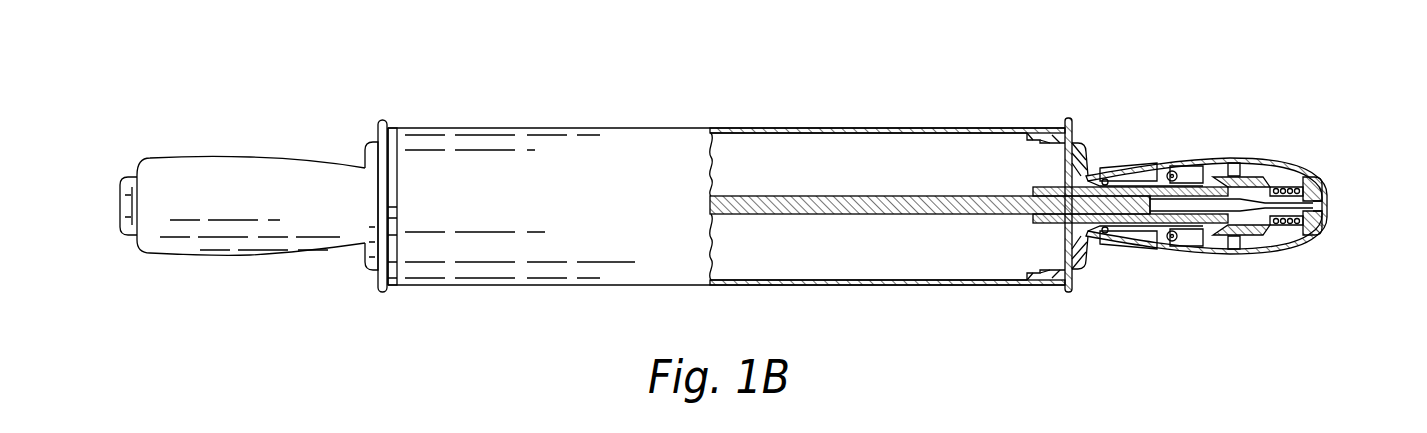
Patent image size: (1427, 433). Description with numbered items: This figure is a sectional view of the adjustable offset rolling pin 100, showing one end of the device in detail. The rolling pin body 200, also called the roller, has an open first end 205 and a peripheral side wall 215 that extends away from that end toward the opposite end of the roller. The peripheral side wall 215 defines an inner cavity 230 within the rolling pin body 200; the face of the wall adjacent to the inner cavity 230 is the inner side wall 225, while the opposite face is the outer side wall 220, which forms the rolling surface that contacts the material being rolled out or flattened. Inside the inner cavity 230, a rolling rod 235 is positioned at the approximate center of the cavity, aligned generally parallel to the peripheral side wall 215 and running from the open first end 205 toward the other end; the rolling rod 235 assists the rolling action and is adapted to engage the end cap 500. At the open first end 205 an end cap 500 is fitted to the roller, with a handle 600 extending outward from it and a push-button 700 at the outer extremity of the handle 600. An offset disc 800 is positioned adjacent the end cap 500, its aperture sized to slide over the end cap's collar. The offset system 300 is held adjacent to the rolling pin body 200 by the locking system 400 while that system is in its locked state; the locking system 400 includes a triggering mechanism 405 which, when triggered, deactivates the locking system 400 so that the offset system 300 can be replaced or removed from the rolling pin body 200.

The adjustable offset rolling pin 100 is at (1025, 72).
The rolling pin body 200 is at (612, 128).
The open first end 205 is at (372, 218).
The peripheral side wall 215 is at (603, 286).
The outer side wall 220 is at (912, 128).
The inner side wall 225 is at (884, 133).
The inner cavity 230 is at (963, 245).
The rolling rod 235 is at (888, 215).
The offset system 300 is at (1085, 118).
The locking system 400 is at (1258, 150).
The triggering mechanism 405 is at (1336, 210).
The end cap 500 is at (383, 125).
The handle 600 is at (258, 160).
The push-button 700 is at (118, 200).
The offset disc 800 is at (383, 292).